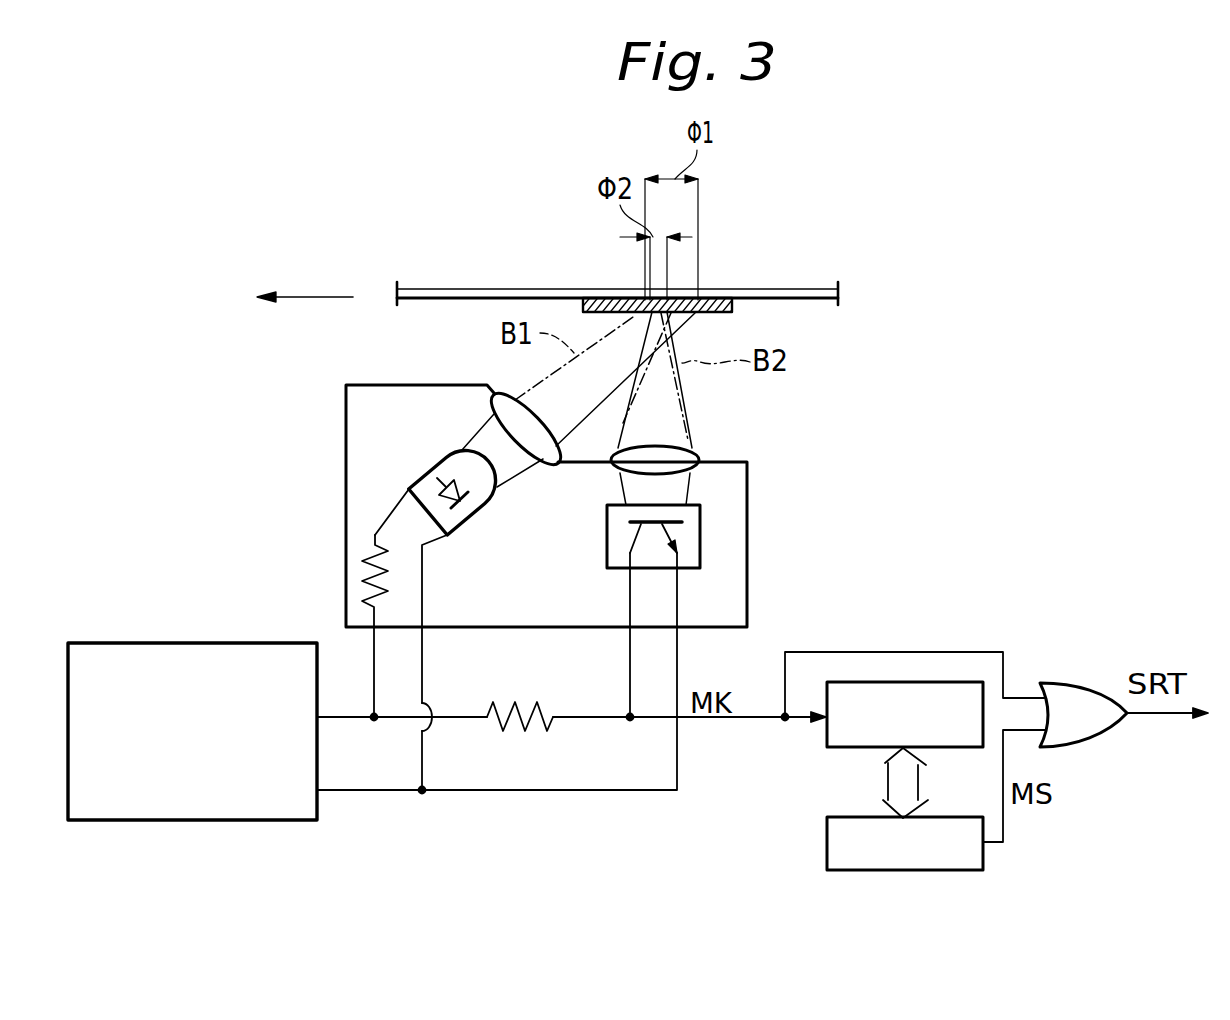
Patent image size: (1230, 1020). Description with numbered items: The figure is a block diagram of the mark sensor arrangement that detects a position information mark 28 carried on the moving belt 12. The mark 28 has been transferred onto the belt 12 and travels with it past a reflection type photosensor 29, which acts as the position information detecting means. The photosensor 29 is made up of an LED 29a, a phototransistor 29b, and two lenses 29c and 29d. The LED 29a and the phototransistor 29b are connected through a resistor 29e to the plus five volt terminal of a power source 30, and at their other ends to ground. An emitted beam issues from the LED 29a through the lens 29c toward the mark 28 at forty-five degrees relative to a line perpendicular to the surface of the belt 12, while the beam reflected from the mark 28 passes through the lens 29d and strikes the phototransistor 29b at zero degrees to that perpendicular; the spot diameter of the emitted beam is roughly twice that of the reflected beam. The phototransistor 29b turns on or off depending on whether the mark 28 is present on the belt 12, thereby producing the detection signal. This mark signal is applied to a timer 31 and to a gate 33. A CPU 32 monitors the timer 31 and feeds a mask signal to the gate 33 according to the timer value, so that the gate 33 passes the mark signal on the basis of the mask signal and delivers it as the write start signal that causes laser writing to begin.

The belt 12 is at (809, 287).
The position information mark 28 is at (590, 296).
The photosensor 29 is at (334, 413).
The LED 29a is at (442, 455).
The phototransistor 29b is at (700, 530).
The lens 29c is at (520, 408).
The lens 29d is at (690, 450).
The resistor 29e is at (366, 570).
The power source 30 is at (213, 820).
The timer 31 is at (840, 748).
The CPU 32 is at (827, 854).
The gate 33 is at (1080, 681).